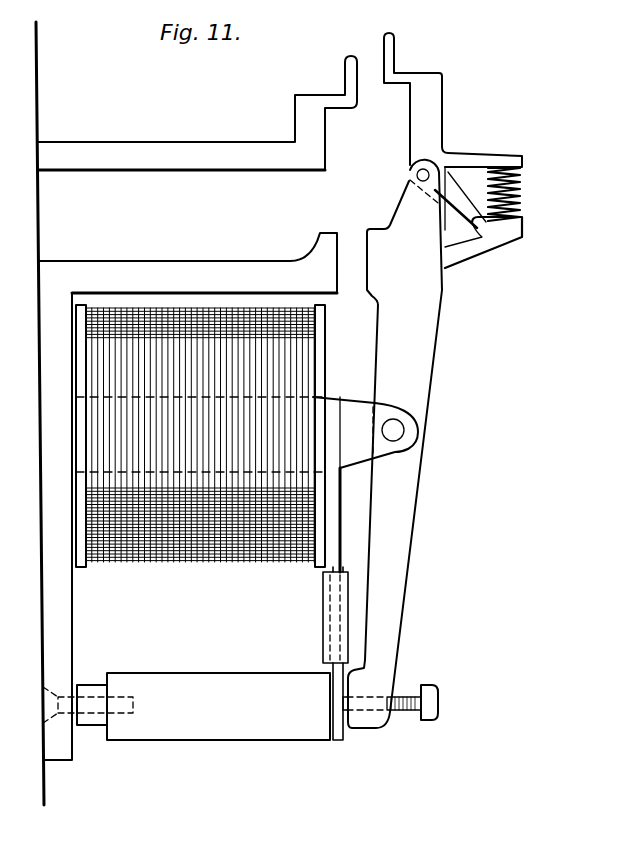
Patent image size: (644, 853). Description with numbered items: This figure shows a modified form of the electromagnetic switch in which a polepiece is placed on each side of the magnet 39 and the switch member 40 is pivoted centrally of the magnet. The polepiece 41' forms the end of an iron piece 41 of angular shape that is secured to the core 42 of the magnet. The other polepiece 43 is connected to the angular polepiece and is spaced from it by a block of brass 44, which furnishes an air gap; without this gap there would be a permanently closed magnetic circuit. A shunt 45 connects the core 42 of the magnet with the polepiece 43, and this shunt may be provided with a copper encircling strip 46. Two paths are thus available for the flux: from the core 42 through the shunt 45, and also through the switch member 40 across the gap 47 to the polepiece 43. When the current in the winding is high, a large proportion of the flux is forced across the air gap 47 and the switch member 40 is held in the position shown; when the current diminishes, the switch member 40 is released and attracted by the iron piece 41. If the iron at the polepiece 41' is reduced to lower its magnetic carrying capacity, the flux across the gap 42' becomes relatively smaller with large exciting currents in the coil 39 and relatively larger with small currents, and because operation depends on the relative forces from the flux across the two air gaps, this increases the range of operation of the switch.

The magnet 39 is at (180, 563).
The switch member 40 is at (404, 527).
The iron piece 41 is at (187, 496).
The polepiece 41' is at (347, 169).
The core 42 is at (359, 466).
The gap 42' is at (358, 304).
The polepiece 43 is at (177, 677).
The block of brass 44 is at (92, 683).
The shunt 45 is at (326, 569).
The copper encircling strip 46 is at (325, 627).
The gap 47 is at (347, 723).